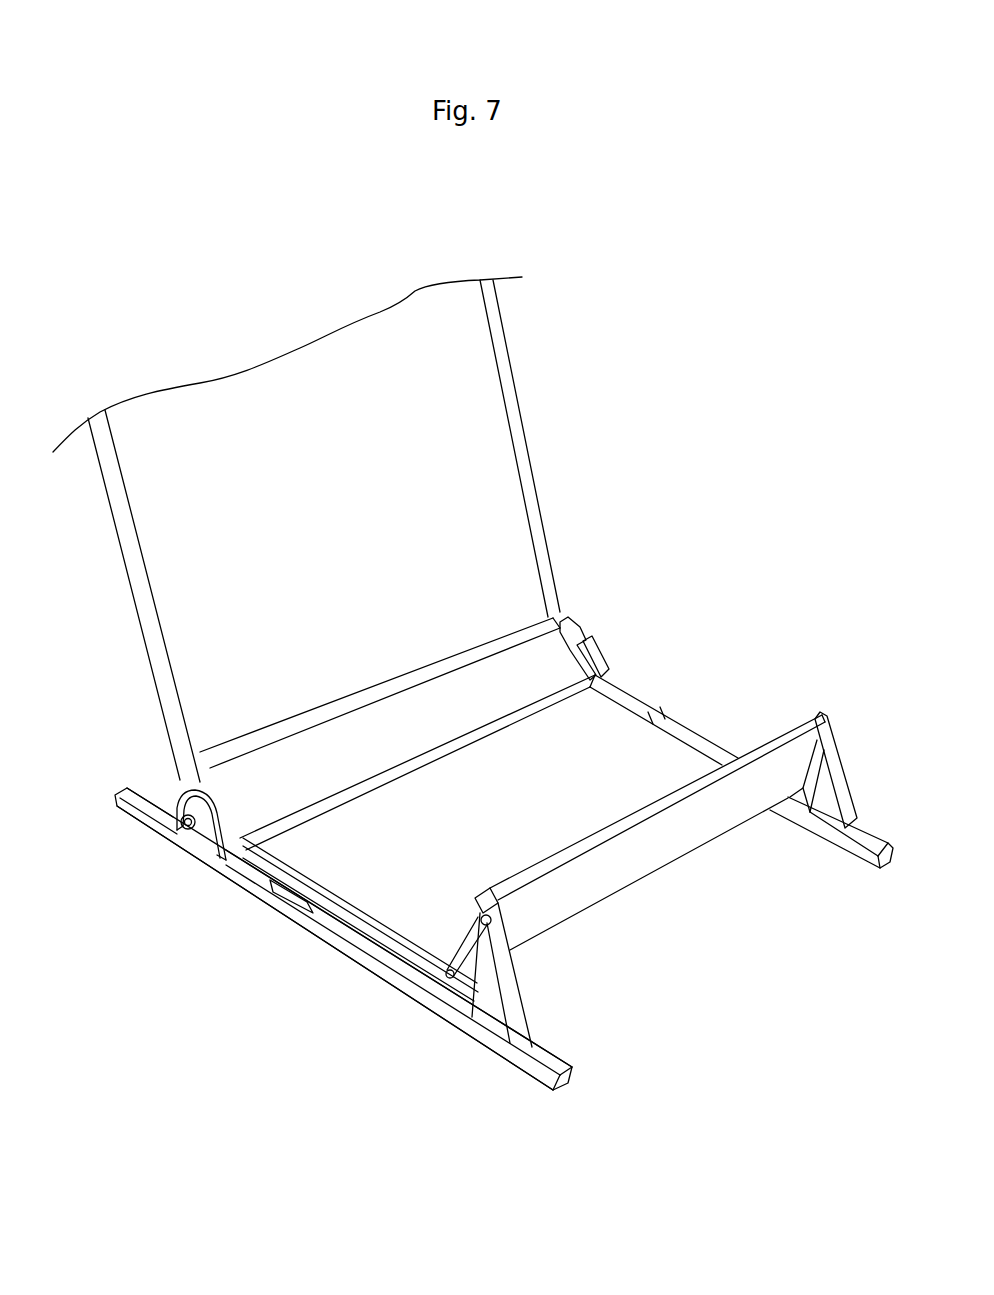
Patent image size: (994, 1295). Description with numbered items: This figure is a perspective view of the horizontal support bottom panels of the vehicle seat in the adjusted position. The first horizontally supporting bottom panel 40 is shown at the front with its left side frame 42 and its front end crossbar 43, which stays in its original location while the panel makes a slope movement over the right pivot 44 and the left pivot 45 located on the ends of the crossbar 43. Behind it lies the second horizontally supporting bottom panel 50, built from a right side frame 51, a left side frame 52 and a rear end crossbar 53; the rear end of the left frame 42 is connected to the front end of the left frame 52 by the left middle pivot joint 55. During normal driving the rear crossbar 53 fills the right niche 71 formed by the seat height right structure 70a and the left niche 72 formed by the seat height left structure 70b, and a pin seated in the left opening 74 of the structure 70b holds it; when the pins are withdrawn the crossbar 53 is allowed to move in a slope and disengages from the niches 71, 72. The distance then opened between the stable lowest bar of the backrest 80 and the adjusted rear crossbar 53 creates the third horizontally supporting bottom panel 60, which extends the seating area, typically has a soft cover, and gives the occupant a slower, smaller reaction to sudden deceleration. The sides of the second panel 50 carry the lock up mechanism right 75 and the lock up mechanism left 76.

The first horizontally supporting bottom panel 40 is at (657, 832).
The left side frame 42 is at (462, 940).
The front end crossbar 43 is at (653, 810).
The right pivot 44 is at (826, 715).
The left pivot 45 is at (477, 970).
The second horizontally supporting bottom panel 50 is at (489, 812).
The right side frame 51 is at (612, 693).
The left side frame 52 is at (375, 930).
The rear end crossbar 53 is at (535, 715).
The left middle pivot joint 55 is at (450, 975).
The third horizontally supporting bottom panel 60 is at (306, 529).
The seat height right structure 70a is at (575, 622).
The seat height left structure 70b is at (166, 826).
The right niche 71 is at (588, 637).
The left niche 72 is at (222, 863).
The left opening 74 is at (186, 826).
The lock up mechanism right 75 is at (650, 713).
The lock up mechanism left 76 is at (288, 897).
The backrest 80 is at (372, 690).